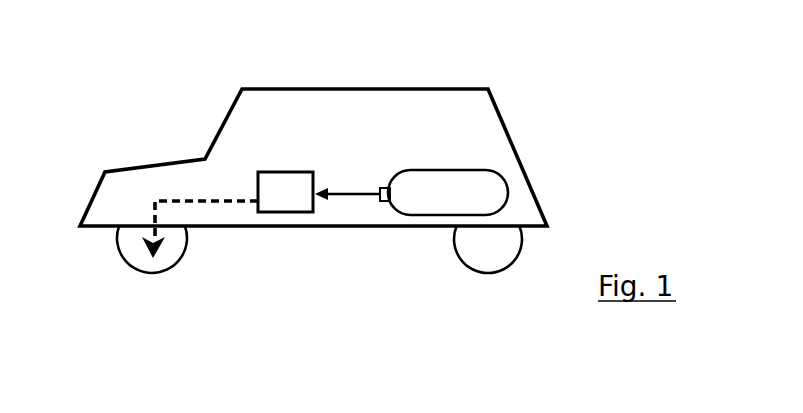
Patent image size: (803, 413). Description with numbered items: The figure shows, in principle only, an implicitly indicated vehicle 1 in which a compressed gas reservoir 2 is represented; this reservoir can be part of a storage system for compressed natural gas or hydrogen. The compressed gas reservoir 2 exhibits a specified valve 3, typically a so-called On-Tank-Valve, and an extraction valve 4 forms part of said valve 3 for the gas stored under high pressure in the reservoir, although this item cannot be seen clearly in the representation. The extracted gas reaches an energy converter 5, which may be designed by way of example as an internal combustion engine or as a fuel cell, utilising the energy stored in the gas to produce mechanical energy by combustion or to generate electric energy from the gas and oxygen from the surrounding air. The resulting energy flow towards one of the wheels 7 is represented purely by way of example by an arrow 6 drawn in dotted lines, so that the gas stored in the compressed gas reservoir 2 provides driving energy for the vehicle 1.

The vehicle 1 is at (236, 133).
The compressed gas reservoir 2 is at (487, 188).
The valve 3 is at (382, 200).
The extraction valve 4 is at (385, 194).
The energy converter 5 is at (285, 192).
The arrow 6 is at (187, 200).
The wheels 7 is at (128, 242).